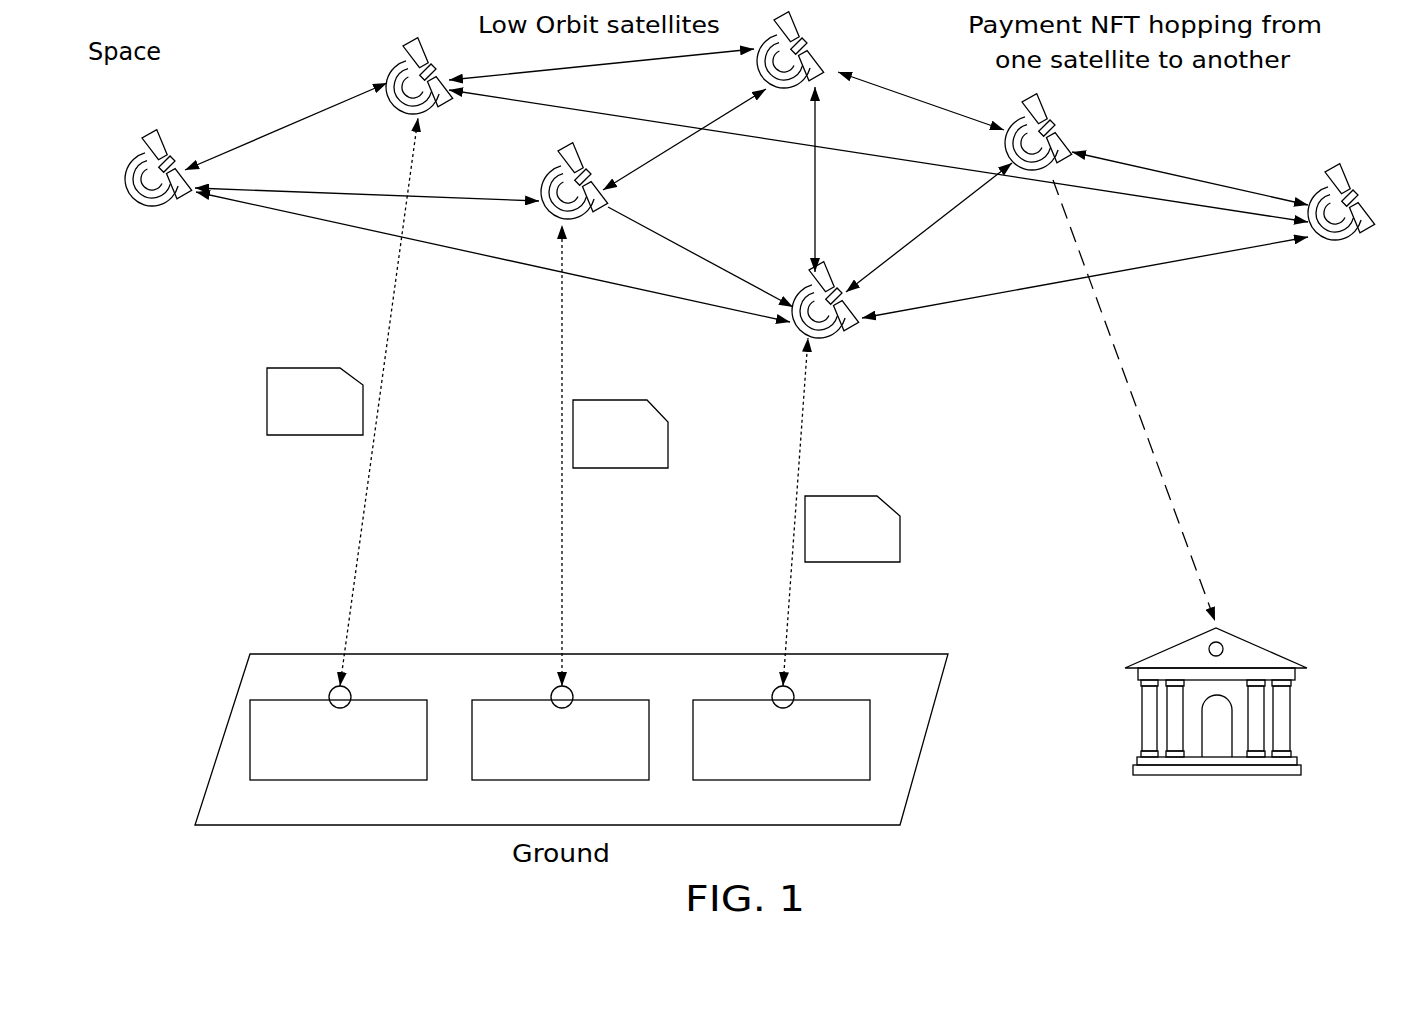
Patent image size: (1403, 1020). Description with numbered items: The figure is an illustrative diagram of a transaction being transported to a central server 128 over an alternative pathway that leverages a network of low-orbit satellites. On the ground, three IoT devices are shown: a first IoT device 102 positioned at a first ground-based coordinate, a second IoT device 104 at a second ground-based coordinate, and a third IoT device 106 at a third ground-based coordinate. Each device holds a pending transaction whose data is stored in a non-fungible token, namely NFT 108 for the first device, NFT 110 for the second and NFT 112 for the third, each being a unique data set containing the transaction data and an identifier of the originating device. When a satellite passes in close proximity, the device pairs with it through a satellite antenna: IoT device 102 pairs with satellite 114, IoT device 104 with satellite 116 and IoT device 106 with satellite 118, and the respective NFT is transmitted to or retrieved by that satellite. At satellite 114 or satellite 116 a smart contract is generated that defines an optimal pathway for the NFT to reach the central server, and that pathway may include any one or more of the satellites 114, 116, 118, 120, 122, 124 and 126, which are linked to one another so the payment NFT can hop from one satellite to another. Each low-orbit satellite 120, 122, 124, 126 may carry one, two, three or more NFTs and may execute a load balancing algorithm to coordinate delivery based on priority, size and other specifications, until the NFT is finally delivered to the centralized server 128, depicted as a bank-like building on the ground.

The IoT device 1 102 is at (320, 780).
The IoT device 2 104 is at (542, 780).
The IoT device 3 106 is at (763, 780).
The NFT 108 is at (280, 368).
The NFT 110 is at (598, 400).
The NFT 112 is at (845, 496).
The satellite 114 is at (390, 75).
The satellite 116 is at (548, 177).
The satellite 118 is at (847, 332).
The low-orbit satellite 120 is at (150, 205).
The low-orbit satellite 122 is at (808, 46).
The low-orbit satellite 124 is at (1055, 127).
The low-orbit satellite 126 is at (1343, 242).
The central server 128 is at (1262, 648).